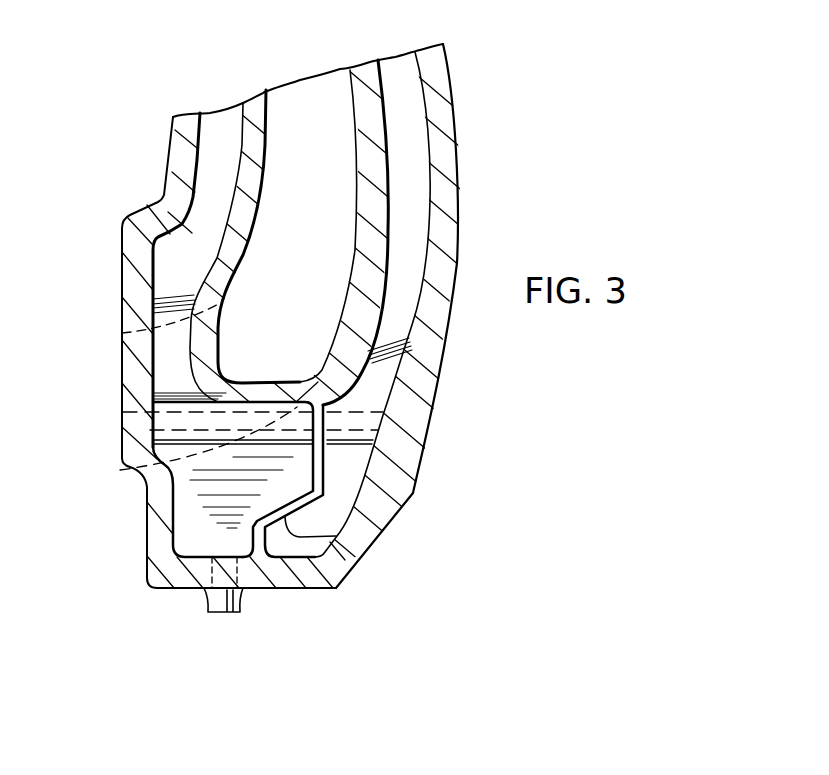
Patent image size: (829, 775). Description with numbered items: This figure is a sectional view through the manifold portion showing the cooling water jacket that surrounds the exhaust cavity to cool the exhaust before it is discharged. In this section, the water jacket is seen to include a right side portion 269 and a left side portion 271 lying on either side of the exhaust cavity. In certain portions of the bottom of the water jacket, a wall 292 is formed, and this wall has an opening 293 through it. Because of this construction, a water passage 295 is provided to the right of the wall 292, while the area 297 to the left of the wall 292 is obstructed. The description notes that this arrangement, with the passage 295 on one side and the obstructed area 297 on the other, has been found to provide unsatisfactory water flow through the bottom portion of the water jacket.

The right side portion 269 is at (412, 125).
The left side portion 271 is at (208, 162).
The wall 292 is at (300, 537).
The opening 293 is at (325, 475).
The water passage 295 is at (345, 493).
The area 297 is at (185, 525).